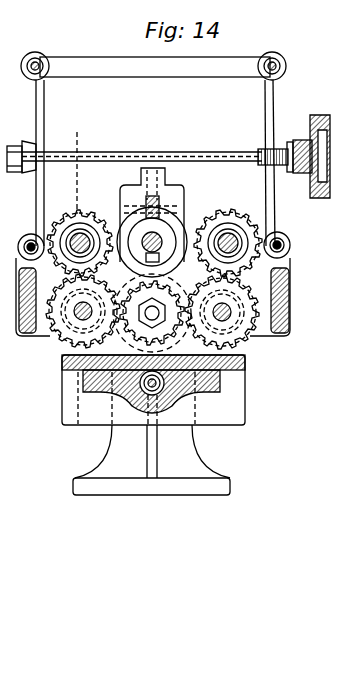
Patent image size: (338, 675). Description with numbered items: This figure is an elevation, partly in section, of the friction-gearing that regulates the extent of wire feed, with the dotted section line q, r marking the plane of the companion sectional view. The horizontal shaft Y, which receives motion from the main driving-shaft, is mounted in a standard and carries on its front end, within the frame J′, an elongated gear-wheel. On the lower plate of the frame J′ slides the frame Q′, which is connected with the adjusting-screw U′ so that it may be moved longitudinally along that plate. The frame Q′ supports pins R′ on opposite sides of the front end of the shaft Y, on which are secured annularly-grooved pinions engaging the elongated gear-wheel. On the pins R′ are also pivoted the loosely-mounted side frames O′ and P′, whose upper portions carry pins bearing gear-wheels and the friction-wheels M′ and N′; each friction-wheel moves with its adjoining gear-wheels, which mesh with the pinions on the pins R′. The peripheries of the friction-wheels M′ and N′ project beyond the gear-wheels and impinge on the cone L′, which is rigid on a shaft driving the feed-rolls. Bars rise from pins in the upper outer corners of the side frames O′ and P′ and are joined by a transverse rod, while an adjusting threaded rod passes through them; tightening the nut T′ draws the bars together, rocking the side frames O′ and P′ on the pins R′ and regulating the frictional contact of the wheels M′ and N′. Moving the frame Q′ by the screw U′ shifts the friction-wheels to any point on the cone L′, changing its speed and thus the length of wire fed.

The adjusting-nut T′ is at (311, 145).
The section line q r q is at (74, 165).
The friction-wheel M′ is at (78, 232).
The frame J′ is at (152, 222).
The cone L′ is at (187, 228).
The friction-wheel N′ is at (231, 240).
The gear shaft j′ is at (240, 236).
The pin R′ is at (82, 312).
The horizontal shaft Y is at (152, 316).
The side frame O′ is at (28, 337).
The side frame P′ is at (262, 334).
The sliding frame Q′ is at (153, 390).
The adjusting-screw U′ is at (150, 386).
The section line q r is at (81, 407).